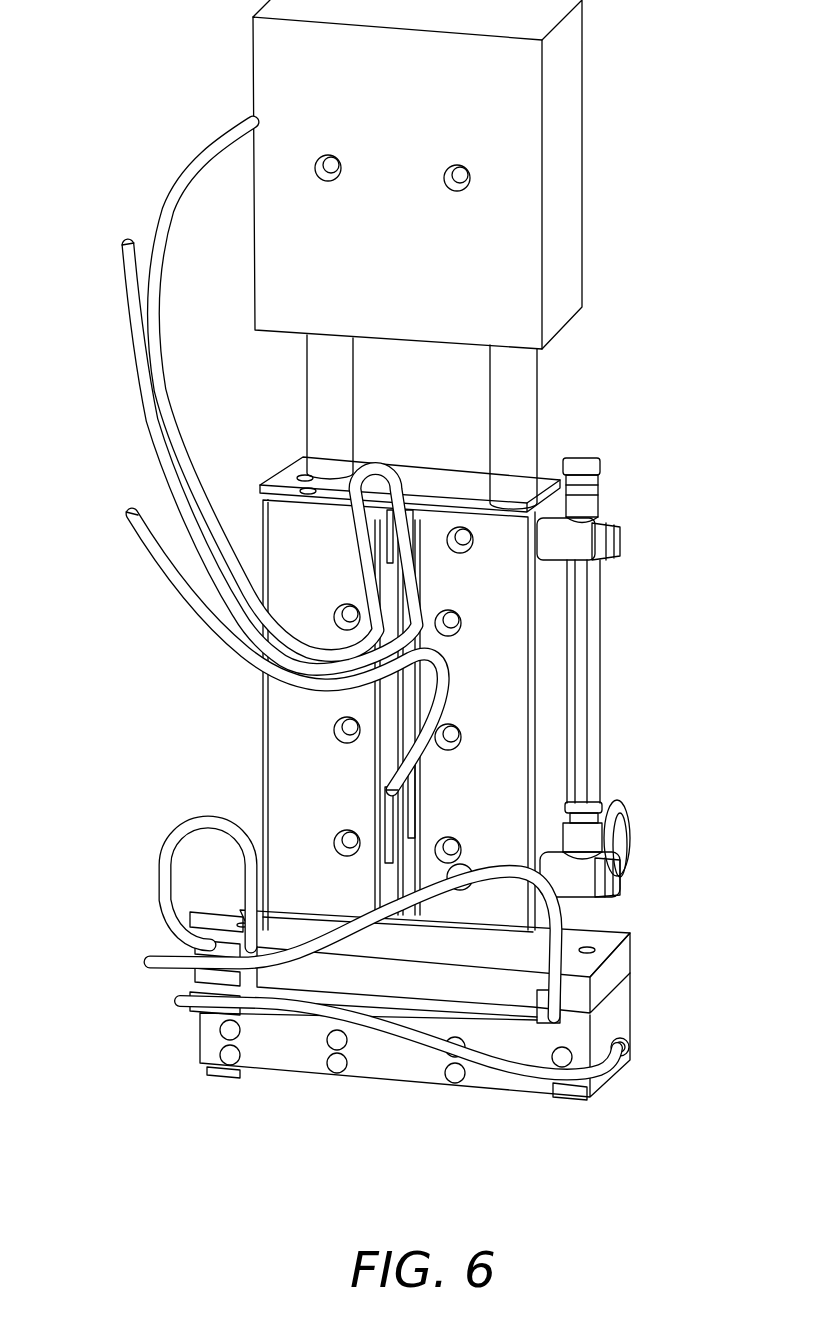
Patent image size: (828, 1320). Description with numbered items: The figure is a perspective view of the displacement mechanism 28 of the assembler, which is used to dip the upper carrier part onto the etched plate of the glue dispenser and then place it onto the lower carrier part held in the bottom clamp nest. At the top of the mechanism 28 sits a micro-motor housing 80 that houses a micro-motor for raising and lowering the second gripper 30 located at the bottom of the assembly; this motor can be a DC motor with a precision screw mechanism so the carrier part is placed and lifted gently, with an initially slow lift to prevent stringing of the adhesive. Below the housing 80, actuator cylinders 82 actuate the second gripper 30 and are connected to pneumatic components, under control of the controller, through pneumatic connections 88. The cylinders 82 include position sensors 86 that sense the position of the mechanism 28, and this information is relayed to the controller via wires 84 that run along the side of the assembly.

The displacement mechanism 28 is at (124, 73).
The second gripper 30 is at (213, 1040).
The micro-motor housing 80 is at (512, 140).
The actuator cylinders 82 is at (505, 690).
The wires 84 is at (173, 398).
The position sensors 86 is at (422, 558).
The pneumatic connections 88 is at (571, 549).